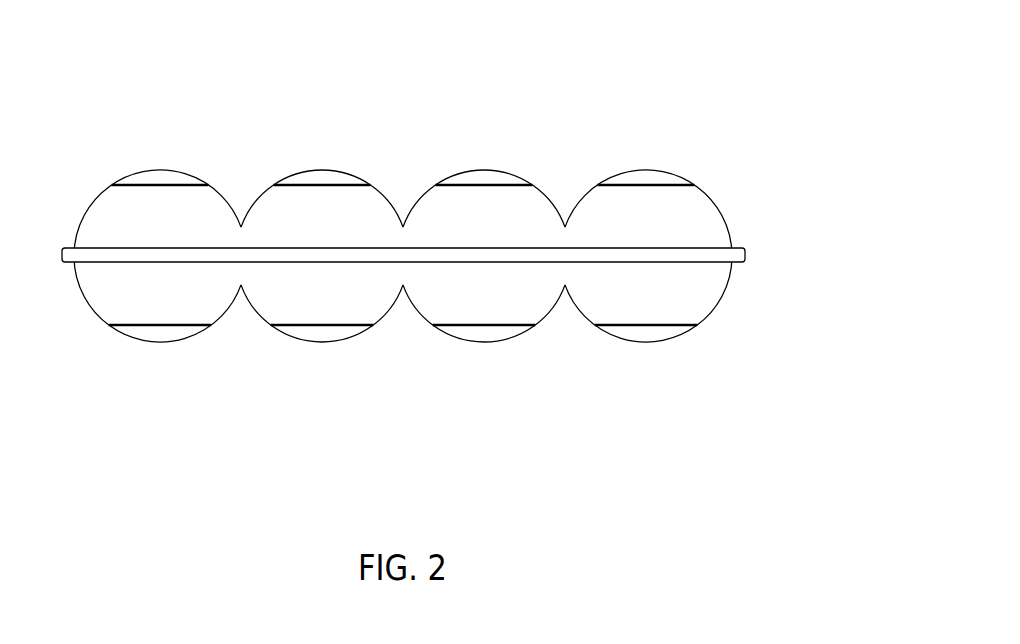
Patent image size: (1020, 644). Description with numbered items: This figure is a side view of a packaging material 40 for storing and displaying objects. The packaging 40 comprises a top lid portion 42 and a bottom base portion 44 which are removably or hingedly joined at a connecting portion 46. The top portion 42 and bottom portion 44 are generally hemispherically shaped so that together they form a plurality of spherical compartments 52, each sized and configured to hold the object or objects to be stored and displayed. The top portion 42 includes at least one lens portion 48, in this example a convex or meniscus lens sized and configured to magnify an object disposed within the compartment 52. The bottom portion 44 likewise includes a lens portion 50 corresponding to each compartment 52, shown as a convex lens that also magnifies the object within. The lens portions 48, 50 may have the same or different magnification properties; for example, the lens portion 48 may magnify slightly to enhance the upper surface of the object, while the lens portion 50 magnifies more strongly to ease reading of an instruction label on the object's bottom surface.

The packaging material 40 is at (734, 42).
The top lid portion 42 is at (733, 238).
The bottom base portion 44 is at (690, 343).
The connecting portion 46 is at (748, 258).
The lens portion 48 is at (520, 180).
The lens portion 50 is at (498, 342).
The spherical compartment 52 is at (659, 316).